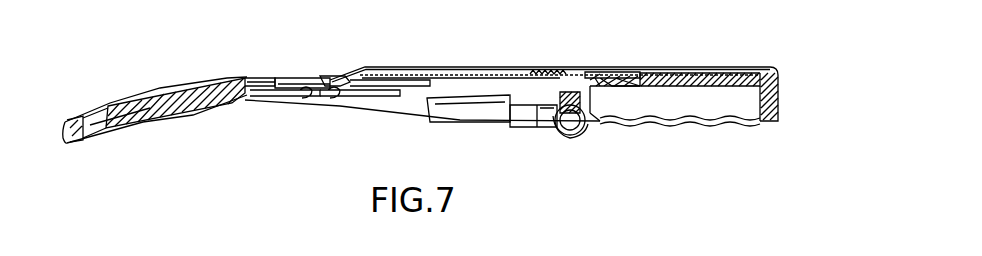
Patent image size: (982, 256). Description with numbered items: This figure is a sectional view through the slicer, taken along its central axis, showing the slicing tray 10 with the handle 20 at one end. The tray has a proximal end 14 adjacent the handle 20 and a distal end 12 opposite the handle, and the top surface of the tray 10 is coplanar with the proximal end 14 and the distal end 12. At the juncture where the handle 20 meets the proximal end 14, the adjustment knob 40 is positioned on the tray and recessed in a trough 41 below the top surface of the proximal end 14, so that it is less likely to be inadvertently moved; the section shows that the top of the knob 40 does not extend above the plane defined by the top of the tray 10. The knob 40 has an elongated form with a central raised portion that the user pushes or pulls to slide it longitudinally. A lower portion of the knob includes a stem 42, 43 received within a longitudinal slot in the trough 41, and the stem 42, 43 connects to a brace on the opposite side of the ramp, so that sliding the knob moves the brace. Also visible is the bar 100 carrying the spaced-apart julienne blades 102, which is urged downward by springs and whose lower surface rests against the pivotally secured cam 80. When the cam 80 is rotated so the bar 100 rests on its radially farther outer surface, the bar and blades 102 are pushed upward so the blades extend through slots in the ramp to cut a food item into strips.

The slicing tray 10 is at (461, 64).
The distal end 12 is at (707, 72).
The proximal end 14 is at (256, 78).
The handle 20 is at (132, 100).
The adjustment knob 40 is at (323, 76).
The trough 41 is at (282, 76).
The stem 42 is at (312, 102).
The stem 43 is at (337, 100).
The cam 80 is at (590, 128).
The bar 100 is at (510, 127).
The julienne blades 102 is at (588, 73).